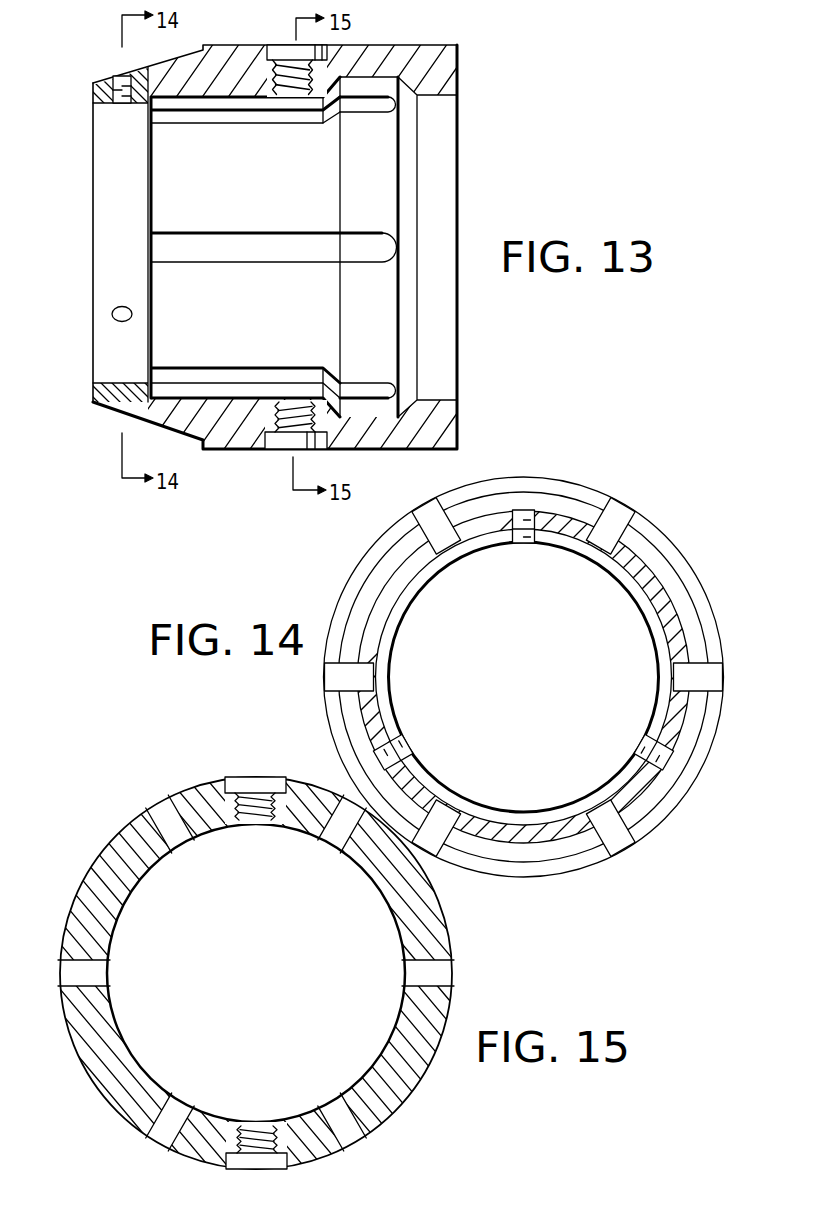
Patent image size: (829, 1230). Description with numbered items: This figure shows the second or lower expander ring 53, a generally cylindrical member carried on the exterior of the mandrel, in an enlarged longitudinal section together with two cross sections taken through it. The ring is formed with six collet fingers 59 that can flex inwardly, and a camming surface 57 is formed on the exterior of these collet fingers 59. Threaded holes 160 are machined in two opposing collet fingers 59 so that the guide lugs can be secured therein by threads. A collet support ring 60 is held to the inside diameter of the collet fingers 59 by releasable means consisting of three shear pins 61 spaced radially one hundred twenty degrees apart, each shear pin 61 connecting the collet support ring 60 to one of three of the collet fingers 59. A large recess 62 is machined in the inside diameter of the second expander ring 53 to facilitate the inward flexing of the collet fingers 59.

In FIG. 13, the second or lower expander ring 53 is at (457, 45).
In FIG. 14, the second or lower expander ring 53 is at (672, 510).
In FIG. 15, the second or lower expander ring 53 is at (470, 1012).
In FIG. 13, the camming surface 57 is at (180, 53).
In FIG. 14, the camming surface 57 is at (665, 570).
In FIG. 13, the collet fingers 59 is at (226, 70).
In FIG. 14, the collet fingers 59 is at (665, 603).
In FIG. 15, the collet fingers 59 is at (197, 790).
In FIG. 13, the collet support ring 60 is at (93, 95).
In FIG. 14, the collet support ring 60 is at (430, 588).
In FIG. 13, the shear pins 61 is at (122, 74).
In FIG. 14, the shear pins 61 is at (525, 543).
In FIG. 13, the large recess 62 is at (358, 413).
In FIG. 13, the threaded holes 160 is at (288, 70).
In FIG. 15, the threaded holes 160 is at (252, 790).